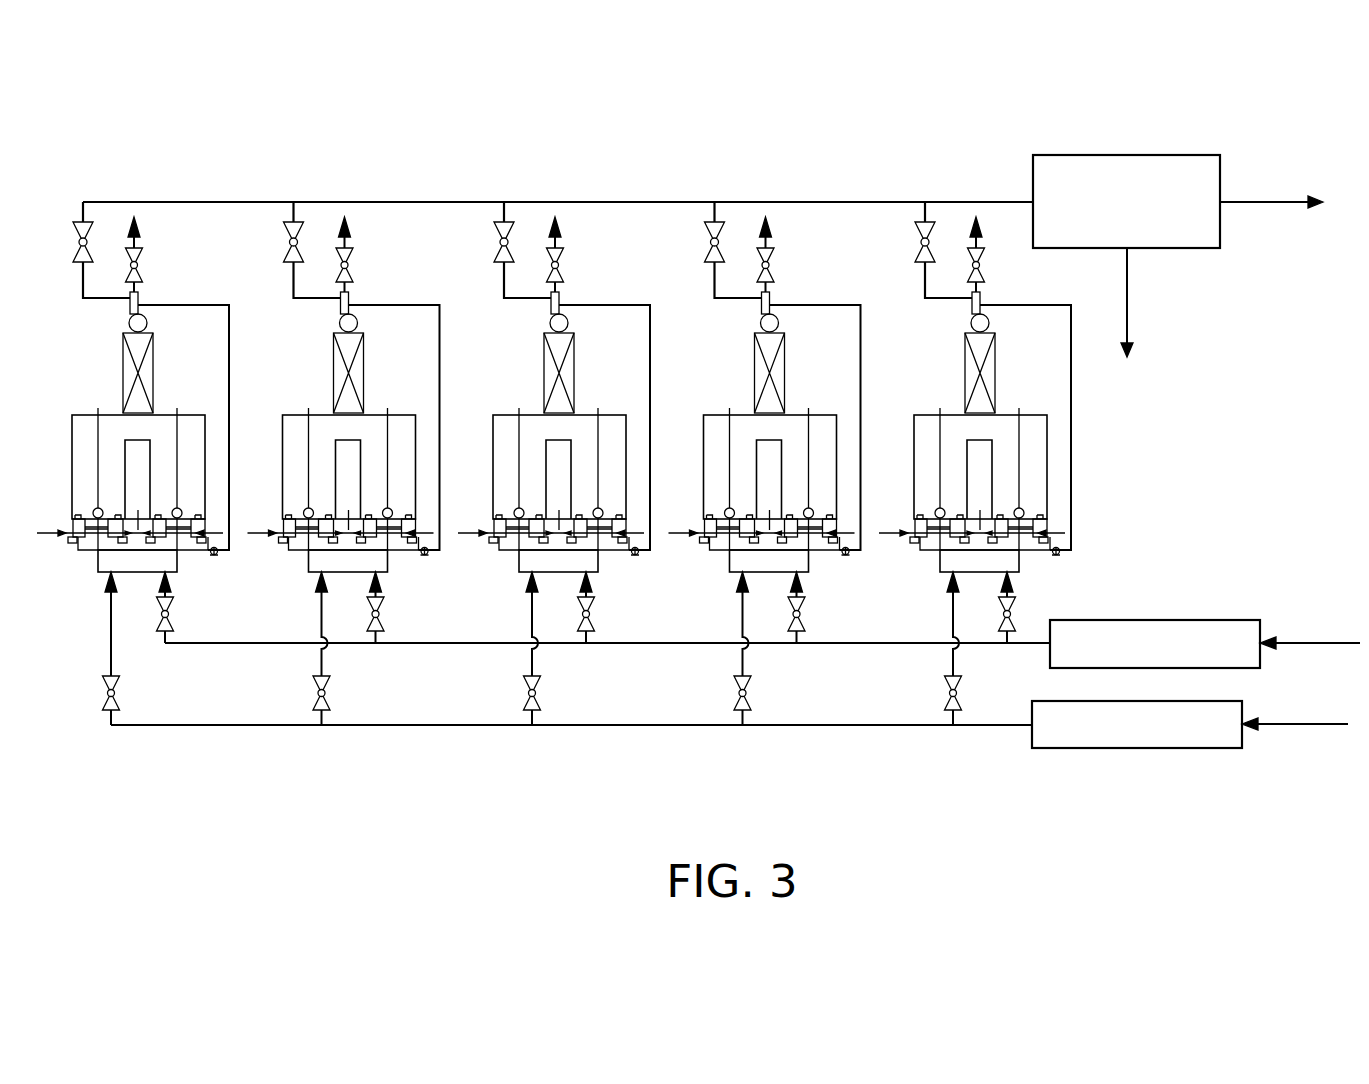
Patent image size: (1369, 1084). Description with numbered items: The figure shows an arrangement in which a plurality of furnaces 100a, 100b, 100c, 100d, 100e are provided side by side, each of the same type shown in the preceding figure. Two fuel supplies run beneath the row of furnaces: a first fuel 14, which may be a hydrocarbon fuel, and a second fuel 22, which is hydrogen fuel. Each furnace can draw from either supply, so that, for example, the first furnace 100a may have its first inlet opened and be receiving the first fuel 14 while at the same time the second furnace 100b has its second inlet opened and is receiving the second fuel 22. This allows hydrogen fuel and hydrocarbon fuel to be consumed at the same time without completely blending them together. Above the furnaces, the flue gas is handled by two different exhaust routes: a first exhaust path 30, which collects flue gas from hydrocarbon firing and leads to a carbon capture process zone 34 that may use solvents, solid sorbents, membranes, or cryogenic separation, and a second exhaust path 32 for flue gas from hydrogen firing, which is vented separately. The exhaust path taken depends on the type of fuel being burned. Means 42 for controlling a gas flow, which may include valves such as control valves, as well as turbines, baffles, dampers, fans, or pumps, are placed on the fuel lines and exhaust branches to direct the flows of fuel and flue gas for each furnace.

The first fuel 14 is at (1313, 643).
The second fuel 22 is at (1310, 724).
The first exhaust path 30 is at (668, 200).
The second exhaust path 32 is at (772, 283).
The carbon capture process zone 34 is at (1127, 155).
The means for controlling a gas flow 42 is at (705, 240).
The first furnace 100a is at (914, 430).
The second furnace 100b is at (715, 414).
The furnace 100c is at (504, 414).
The furnace 100d is at (294, 414).
The furnace 100e is at (83, 414).